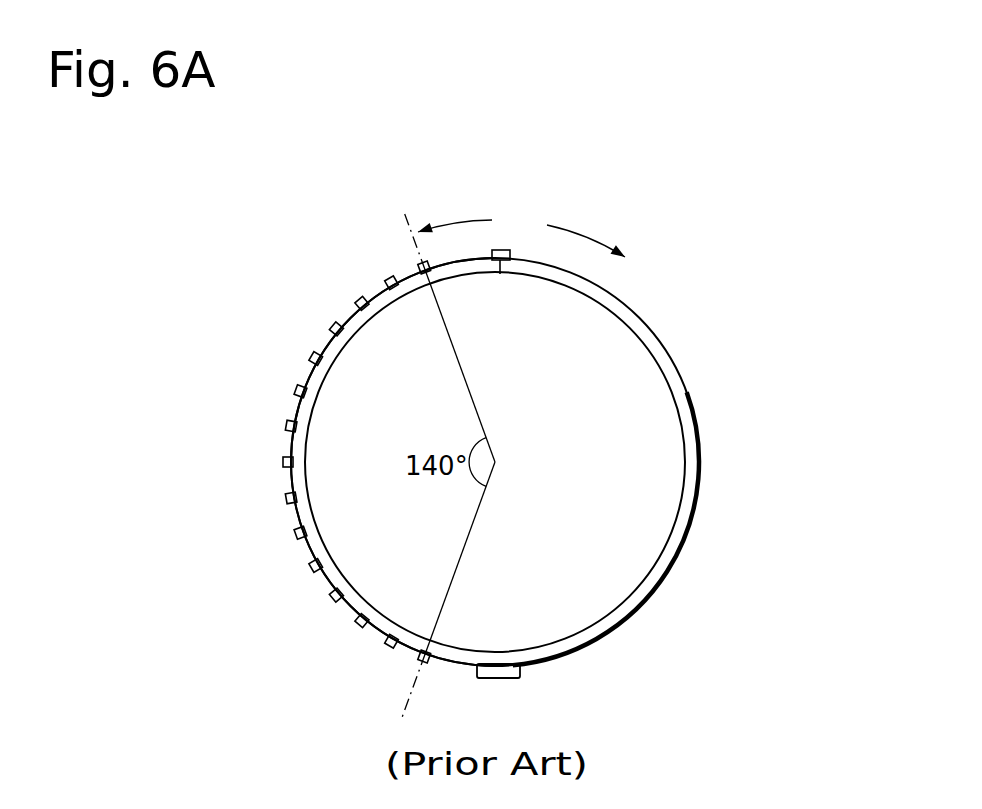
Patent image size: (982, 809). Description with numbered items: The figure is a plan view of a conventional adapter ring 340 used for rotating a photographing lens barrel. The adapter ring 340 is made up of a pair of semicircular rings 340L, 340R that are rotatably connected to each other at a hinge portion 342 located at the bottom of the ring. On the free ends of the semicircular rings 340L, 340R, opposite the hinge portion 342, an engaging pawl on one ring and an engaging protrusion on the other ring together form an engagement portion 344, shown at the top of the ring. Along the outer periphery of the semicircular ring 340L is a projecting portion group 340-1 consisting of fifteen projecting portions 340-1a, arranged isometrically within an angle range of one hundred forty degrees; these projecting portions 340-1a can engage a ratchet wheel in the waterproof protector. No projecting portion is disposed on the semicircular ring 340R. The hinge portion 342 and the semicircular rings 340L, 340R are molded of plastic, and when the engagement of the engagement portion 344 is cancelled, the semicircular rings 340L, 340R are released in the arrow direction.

The adapter ring 340 is at (488, 431).
The semicircular ring 340L is at (293, 477).
The semicircular ring 340R is at (699, 525).
The projecting portion group 340-1 is at (272, 552).
The projecting portion 340-1a is at (323, 593).
The hinge portion 342 is at (522, 671).
The engagement portion 344 is at (506, 250).